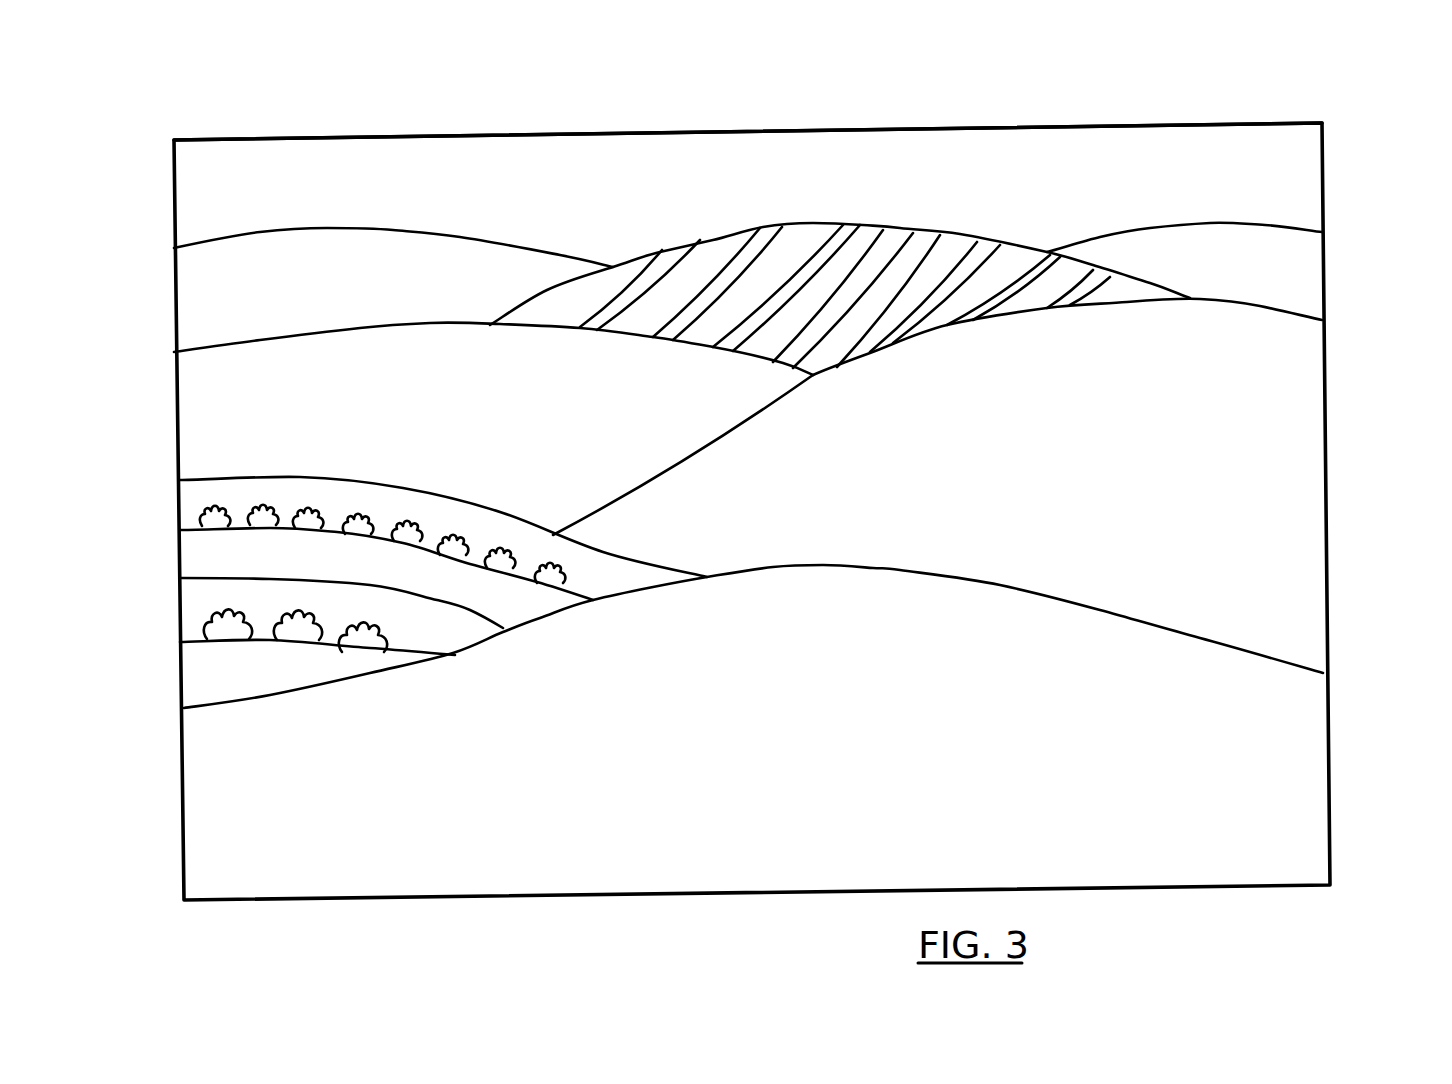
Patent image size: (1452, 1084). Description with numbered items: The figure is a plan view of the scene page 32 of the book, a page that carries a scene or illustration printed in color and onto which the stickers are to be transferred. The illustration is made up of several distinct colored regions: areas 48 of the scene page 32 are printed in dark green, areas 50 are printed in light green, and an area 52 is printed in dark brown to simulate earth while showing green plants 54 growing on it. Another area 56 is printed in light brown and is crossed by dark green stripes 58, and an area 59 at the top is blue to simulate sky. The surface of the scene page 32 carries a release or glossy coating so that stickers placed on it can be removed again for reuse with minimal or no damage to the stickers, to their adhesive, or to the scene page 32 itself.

The scene page 32 is at (1333, 770).
The areas printed in dark green 48 is at (377, 247).
The areas printed in light green 50 is at (443, 340).
The area printed in dark brown 52 is at (520, 602).
The green plants 54 is at (367, 652).
The area printed in light brown 56 is at (721, 244).
The dark green stripes 58 is at (905, 248).
The area printed in blue 59 is at (1043, 147).